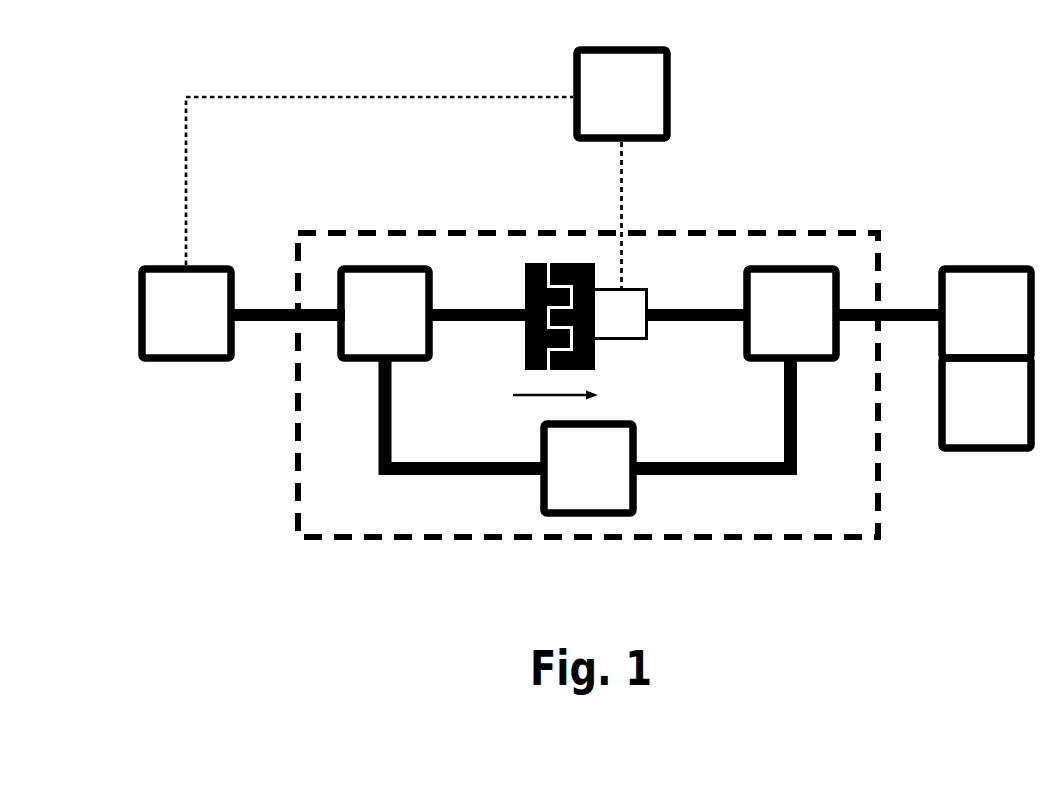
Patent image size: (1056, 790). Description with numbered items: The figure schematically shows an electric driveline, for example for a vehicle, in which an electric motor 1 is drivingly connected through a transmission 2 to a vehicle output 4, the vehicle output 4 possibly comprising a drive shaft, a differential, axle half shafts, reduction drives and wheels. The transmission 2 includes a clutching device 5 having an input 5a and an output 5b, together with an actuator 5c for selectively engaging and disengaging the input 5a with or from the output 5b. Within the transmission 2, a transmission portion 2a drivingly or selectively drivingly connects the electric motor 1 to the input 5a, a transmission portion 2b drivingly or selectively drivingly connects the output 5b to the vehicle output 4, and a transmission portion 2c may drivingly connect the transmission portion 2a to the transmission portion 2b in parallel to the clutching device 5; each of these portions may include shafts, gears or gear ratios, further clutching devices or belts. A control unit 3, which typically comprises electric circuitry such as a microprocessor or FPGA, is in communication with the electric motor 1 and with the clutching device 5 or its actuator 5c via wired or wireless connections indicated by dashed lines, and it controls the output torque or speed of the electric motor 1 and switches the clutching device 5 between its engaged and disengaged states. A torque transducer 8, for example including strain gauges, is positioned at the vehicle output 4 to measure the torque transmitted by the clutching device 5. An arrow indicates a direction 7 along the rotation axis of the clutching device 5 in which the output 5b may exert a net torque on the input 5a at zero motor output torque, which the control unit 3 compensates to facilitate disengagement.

The electric motor 1 is at (175, 332).
The transmission 2 is at (835, 235).
The transmission portion 2a is at (363, 332).
The transmission portion 2b is at (770, 332).
The transmission portion 2c is at (567, 487).
The control unit 3 is at (611, 113).
The vehicle output 4 is at (975, 332).
The clutching device 5 is at (601, 278).
The input 5a is at (527, 350).
The output 5b is at (595, 352).
The actuator 5c is at (650, 270).
The direction 7 is at (552, 397).
The torque transducer 8 is at (975, 421).